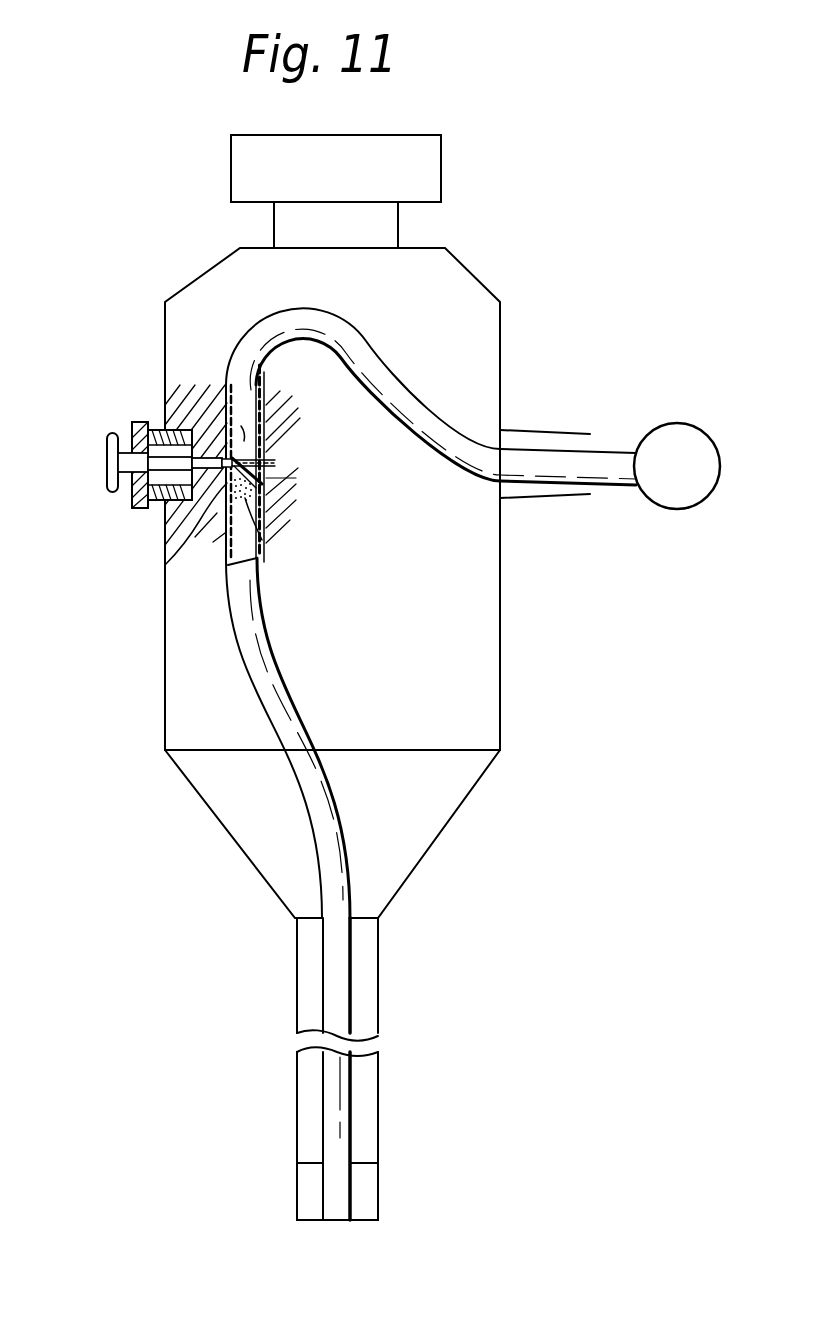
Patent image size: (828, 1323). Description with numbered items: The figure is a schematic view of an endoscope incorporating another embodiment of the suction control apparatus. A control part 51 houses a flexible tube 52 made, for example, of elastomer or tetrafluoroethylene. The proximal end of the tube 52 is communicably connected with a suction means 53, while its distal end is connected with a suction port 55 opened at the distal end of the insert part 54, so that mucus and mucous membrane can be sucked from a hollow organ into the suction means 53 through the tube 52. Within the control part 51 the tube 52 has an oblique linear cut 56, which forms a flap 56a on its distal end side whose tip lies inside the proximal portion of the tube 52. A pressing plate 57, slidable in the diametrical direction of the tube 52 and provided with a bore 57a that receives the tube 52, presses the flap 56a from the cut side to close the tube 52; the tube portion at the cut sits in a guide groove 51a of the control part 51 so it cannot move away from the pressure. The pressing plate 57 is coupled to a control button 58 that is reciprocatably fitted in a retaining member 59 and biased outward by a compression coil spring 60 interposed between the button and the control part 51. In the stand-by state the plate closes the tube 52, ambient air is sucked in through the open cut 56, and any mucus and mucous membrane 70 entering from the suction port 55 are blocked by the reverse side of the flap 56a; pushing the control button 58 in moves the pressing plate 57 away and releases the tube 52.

The control part 51 is at (488, 331).
The guide groove 51a is at (276, 420).
The flexible tube 52 is at (240, 587).
The suction means 53 is at (690, 495).
The insert part 54 is at (375, 1092).
The suction port 55 is at (335, 1210).
The linear cut 56 is at (276, 448).
The flap 56a is at (165, 566).
The pressing plate 57 is at (272, 483).
The bore 57a is at (158, 428).
The control button 58 is at (110, 486).
The retaining member 59 is at (134, 422).
The compression coil spring 60 is at (132, 502).
The mucus and mucous membrane 70 is at (278, 533).